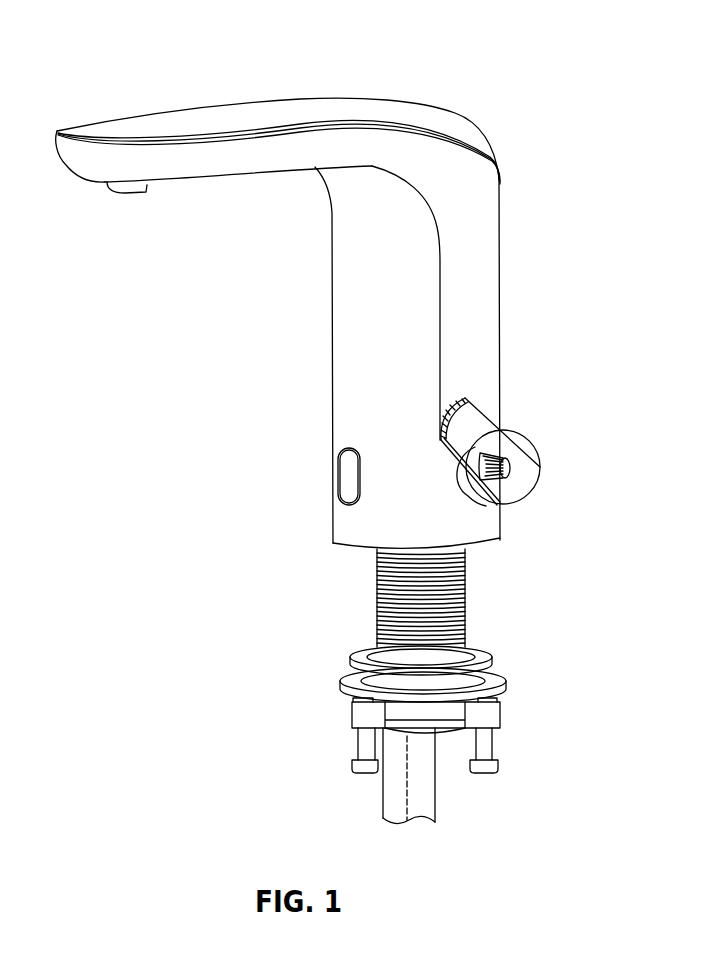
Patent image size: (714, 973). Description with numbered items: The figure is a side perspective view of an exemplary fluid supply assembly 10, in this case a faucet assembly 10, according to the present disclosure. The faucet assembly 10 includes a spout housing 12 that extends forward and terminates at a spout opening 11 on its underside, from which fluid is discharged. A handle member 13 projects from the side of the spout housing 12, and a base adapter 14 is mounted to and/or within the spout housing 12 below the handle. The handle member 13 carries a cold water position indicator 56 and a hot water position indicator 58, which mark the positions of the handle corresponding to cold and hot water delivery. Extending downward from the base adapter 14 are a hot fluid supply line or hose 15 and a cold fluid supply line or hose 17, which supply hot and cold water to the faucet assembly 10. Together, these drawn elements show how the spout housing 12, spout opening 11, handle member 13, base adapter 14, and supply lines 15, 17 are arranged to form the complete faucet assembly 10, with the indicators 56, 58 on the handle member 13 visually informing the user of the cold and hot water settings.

The fluid supply assembly 10 is at (114, 57).
The spout opening 11 is at (123, 210).
The spout housing 12 is at (470, 170).
The handle member 13 is at (525, 472).
The base adapter 14 is at (499, 563).
The hot fluid supply line 15 is at (392, 792).
The cold fluid supply line 17 is at (423, 806).
The cold water position indicator 56 is at (425, 405).
The hot water position indicator 58 is at (459, 384).